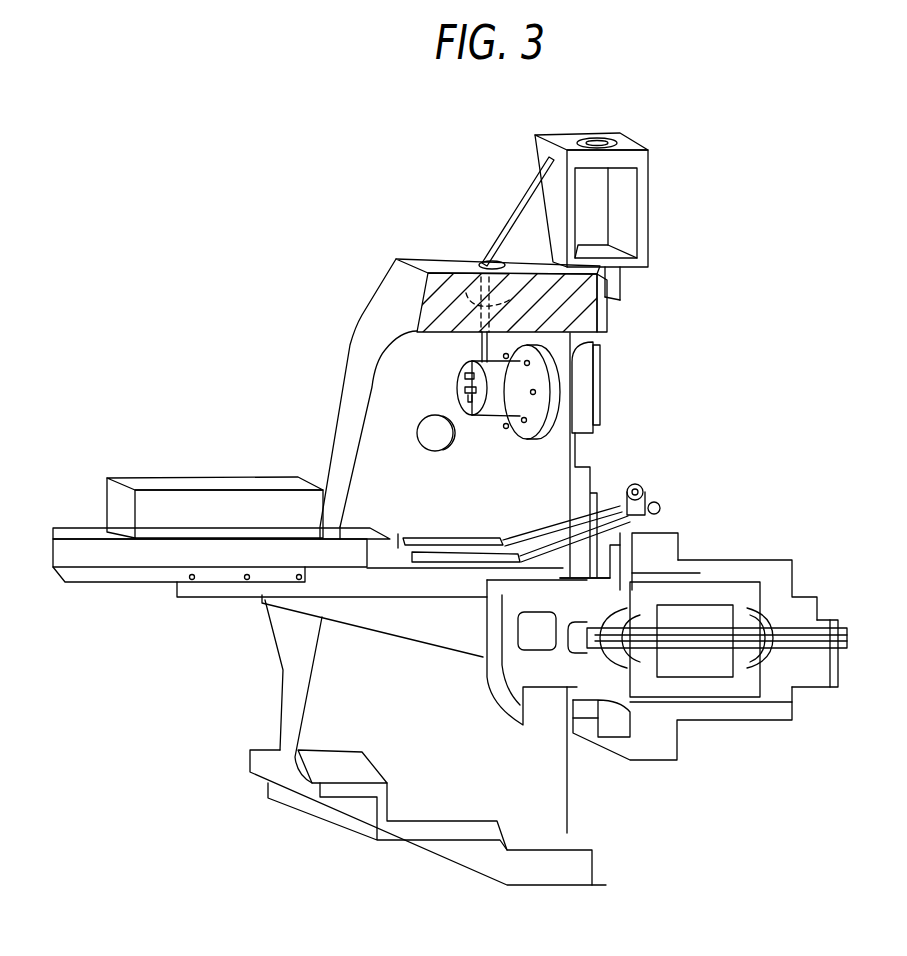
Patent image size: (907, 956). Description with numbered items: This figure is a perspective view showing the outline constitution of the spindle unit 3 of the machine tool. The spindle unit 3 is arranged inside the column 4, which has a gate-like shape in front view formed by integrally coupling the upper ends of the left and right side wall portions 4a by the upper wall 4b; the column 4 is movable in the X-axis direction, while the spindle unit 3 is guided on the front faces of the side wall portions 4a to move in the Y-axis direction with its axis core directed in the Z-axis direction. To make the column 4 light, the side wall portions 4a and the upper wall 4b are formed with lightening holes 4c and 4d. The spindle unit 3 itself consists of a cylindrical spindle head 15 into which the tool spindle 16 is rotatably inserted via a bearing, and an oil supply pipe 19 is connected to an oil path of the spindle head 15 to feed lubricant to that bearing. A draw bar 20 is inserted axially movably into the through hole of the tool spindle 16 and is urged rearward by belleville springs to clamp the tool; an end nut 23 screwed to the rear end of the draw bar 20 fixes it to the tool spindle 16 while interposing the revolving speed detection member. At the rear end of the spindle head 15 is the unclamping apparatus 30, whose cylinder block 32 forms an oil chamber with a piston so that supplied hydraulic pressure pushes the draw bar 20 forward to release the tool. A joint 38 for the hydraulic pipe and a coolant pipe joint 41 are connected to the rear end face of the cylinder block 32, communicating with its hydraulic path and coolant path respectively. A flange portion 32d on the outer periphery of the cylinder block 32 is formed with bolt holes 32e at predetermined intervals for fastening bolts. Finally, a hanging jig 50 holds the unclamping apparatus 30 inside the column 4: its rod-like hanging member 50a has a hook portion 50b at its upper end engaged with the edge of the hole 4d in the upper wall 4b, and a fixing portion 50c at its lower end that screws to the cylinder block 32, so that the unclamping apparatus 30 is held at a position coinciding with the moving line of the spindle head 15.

The spindle unit 3 is at (780, 518).
The column 4 is at (338, 344).
The side wall portion 4a is at (335, 436).
The upper wall 4b is at (430, 265).
The lightening hole 4c is at (510, 452).
The lightening hole 4d is at (488, 262).
The spindle head 15 is at (816, 578).
The tool spindle 16 is at (815, 620).
The oil supply pipe 19 is at (430, 537).
The draw bar 20 is at (846, 635).
The end nut 23 is at (560, 690).
The unclamping apparatus 30 is at (440, 394).
The cylinder block 32 is at (574, 406).
The flange portion 32d is at (553, 424).
The bolt hole 32e is at (536, 392).
The joint for the hydraulic pipe 38 is at (460, 380).
The coolant pipe joint 41 is at (463, 414).
The hanging jig 50 is at (470, 290).
The hanging member 50a is at (512, 298).
The hook portion 50b is at (503, 232).
The fixing portion 50c is at (481, 355).